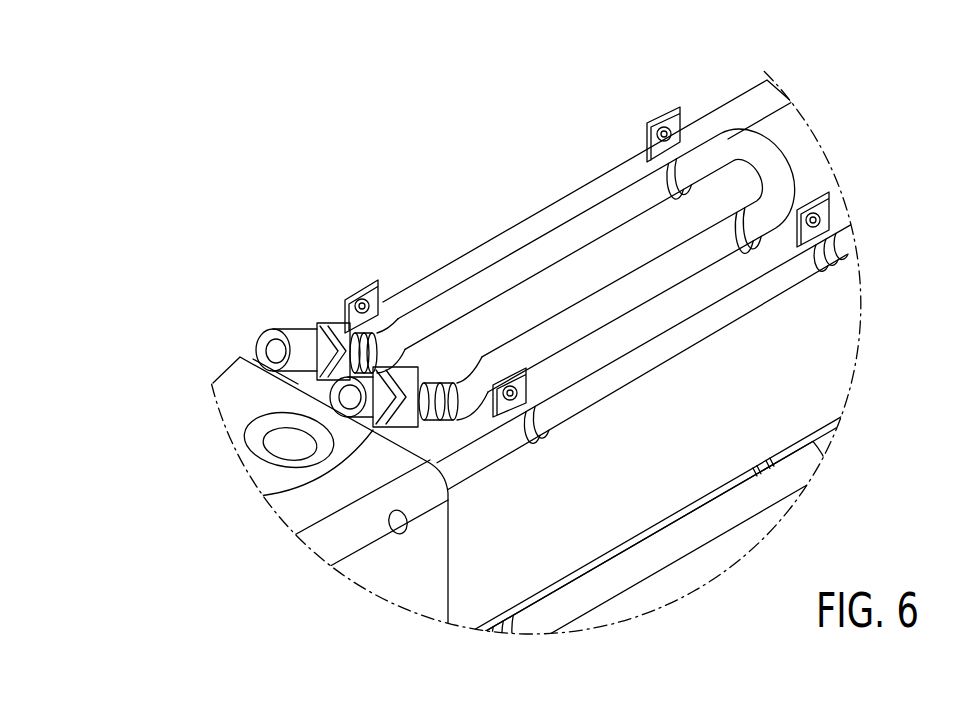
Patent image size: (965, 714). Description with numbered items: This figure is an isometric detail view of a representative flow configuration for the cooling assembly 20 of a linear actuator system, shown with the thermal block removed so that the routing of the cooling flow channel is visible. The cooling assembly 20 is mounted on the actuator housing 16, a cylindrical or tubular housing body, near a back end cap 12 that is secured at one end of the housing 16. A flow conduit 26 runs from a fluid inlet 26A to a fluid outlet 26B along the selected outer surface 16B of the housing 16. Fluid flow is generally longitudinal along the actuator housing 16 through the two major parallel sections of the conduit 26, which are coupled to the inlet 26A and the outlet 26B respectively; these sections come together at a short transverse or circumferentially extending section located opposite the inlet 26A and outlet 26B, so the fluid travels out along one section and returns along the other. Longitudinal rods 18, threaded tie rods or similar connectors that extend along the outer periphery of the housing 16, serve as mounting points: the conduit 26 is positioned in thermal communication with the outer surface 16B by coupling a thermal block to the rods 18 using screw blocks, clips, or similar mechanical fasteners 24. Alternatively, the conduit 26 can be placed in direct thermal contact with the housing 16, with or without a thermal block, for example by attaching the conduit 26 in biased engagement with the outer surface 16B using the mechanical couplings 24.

The back end cap 12 is at (237, 393).
The actuator housing 16 is at (573, 322).
The outer surface of actuator housing 16B is at (718, 430).
The longitudinal rods 18 is at (747, 307).
The cooling assembly 20 is at (431, 225).
The mechanical fasteners 24 is at (666, 113).
The flow conduit 26 is at (603, 220).
The fluid inlet 26A is at (267, 496).
The fluid outlet 26B is at (301, 340).